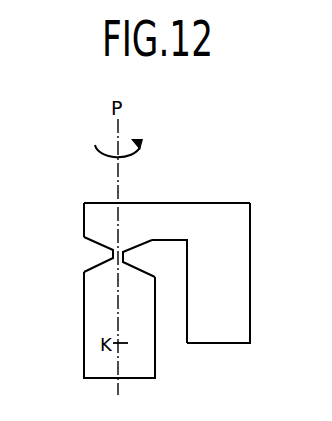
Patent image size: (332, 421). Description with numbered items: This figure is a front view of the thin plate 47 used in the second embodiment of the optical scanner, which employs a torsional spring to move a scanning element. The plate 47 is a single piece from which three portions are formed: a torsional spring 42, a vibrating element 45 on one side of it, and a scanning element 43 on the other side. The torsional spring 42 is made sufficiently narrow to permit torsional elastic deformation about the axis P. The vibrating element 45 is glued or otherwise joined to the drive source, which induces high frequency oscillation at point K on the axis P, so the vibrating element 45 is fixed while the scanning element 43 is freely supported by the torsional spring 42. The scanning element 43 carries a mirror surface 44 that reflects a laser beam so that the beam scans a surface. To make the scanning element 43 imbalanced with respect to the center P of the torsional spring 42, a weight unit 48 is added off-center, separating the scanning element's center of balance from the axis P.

The torsional spring 42 is at (111, 254).
The scanning element 43 is at (237, 254).
The mirror surface 44 is at (133, 222).
The vibrating element 45 is at (90, 330).
The thin plate 47 is at (74, 217).
The weight unit 48 is at (223, 312).